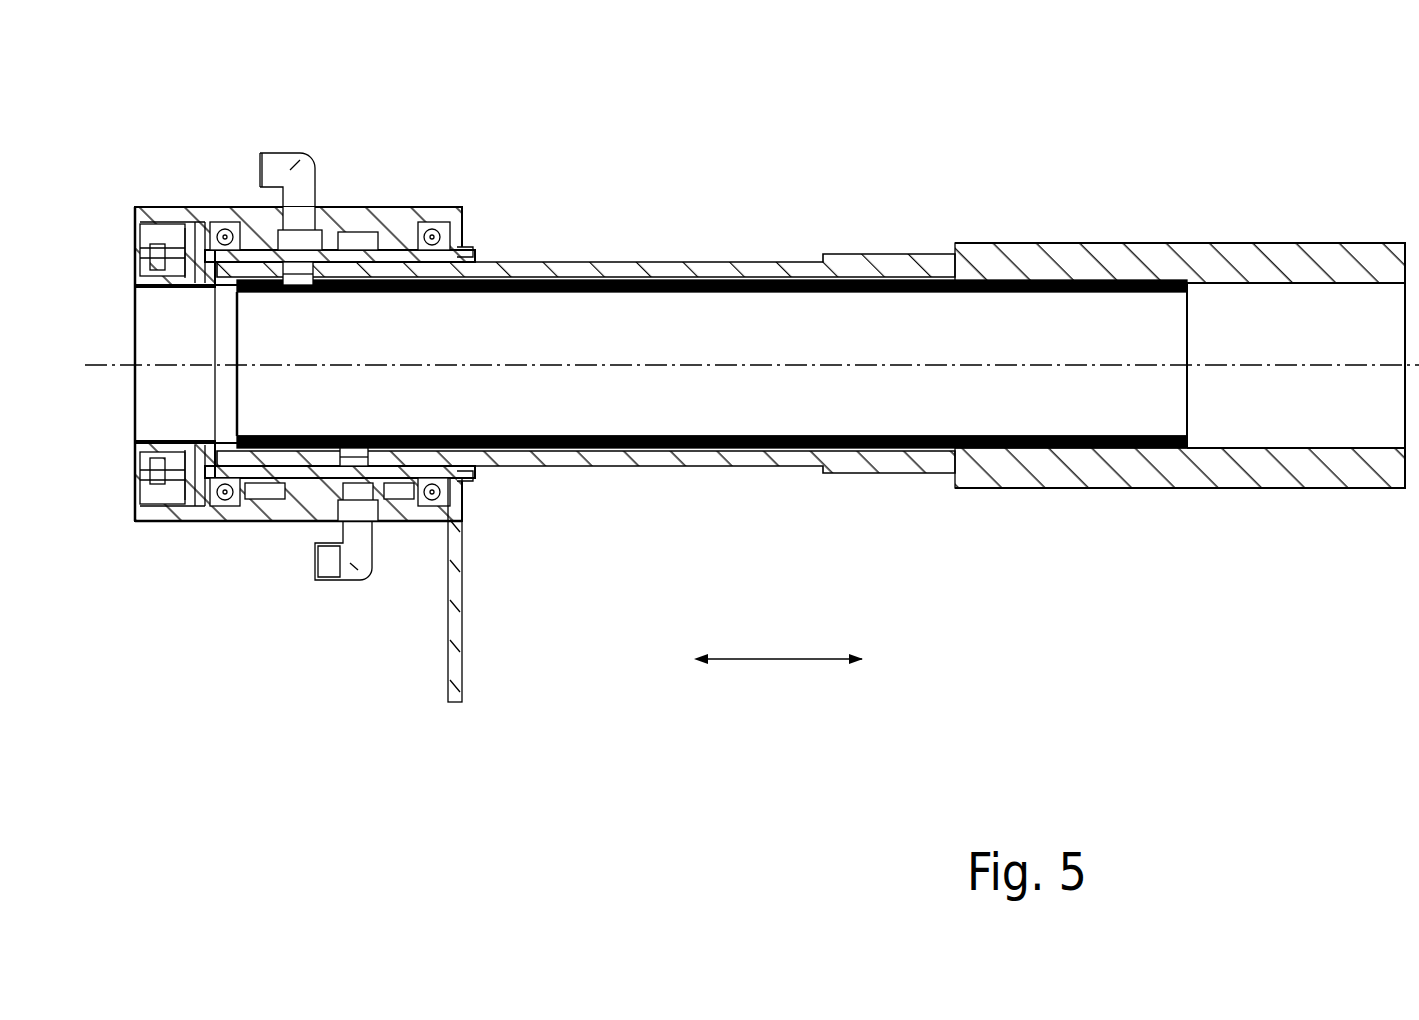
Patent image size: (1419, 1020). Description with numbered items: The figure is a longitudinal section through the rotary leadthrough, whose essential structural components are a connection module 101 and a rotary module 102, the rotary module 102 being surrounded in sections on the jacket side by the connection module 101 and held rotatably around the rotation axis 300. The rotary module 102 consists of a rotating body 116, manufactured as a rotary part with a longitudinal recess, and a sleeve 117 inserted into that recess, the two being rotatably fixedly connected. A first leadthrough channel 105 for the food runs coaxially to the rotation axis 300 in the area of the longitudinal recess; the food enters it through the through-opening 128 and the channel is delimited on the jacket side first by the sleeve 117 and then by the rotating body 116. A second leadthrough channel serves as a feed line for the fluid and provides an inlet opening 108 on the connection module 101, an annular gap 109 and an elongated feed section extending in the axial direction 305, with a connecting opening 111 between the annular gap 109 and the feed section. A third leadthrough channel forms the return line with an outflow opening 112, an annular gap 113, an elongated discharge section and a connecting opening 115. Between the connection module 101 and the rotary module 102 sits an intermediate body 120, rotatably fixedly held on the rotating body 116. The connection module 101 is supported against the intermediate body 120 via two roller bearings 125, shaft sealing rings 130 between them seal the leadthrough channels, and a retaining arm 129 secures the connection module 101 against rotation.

The connection module 101 is at (232, 203).
The rotary module 102 is at (1086, 233).
The first leadthrough channel 105 is at (742, 315).
The inlet opening 108 is at (310, 212).
The annular gap 109 is at (297, 512).
The connecting opening 111 is at (298, 292).
The outflow opening 112 is at (362, 575).
The annular gap 113 is at (358, 234).
The connecting opening 115 is at (354, 451).
The rotating body 116 is at (1121, 468).
The sleeve 117 is at (741, 432).
The intermediate body 120 is at (405, 263).
The roller bearing 125 is at (236, 518).
The through-opening 128 is at (119, 430).
The retaining arm 129 is at (463, 567).
The shaft sealing ring 130 is at (272, 238).
The rotation axis 300 is at (890, 352).
The axial direction 305 is at (780, 661).